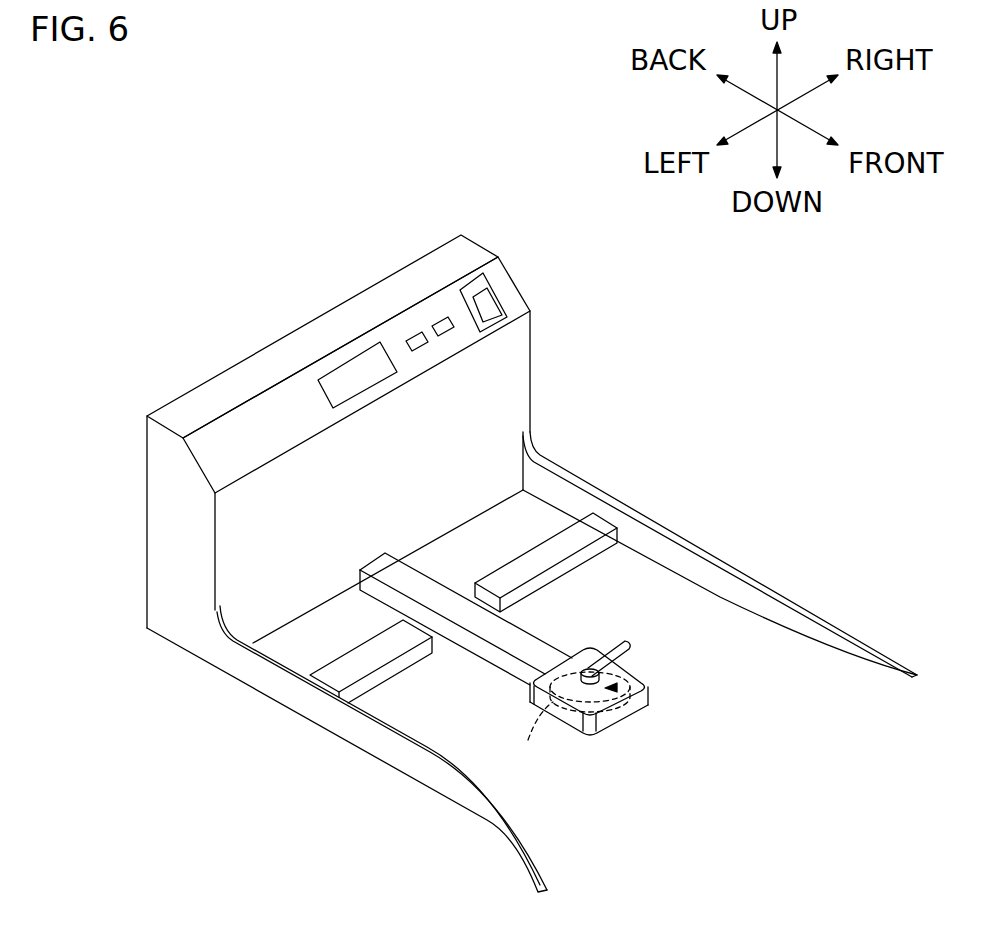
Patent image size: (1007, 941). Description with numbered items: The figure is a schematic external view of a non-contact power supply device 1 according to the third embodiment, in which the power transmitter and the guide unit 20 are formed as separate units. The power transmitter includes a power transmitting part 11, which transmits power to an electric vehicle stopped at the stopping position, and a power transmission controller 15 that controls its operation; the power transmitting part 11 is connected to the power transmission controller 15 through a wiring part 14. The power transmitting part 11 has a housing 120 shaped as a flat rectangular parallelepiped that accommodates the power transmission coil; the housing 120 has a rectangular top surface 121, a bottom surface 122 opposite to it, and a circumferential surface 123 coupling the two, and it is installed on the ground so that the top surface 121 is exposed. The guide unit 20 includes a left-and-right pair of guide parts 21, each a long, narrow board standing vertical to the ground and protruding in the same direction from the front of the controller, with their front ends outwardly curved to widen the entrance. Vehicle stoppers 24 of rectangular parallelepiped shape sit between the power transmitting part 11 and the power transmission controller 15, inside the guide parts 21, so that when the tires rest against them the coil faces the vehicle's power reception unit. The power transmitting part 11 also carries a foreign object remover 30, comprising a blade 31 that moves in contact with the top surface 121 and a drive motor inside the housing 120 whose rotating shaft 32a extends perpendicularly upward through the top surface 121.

The non-contact power supply device 1 is at (580, 323).
The power transmitting part 11 is at (570, 743).
The wiring part 14 is at (522, 645).
The power transmission controller 15 is at (268, 340).
The guide unit 20 is at (423, 825).
The guide part 21 is at (430, 750).
The vehicle stopper 24 is at (332, 670).
The foreign object remover 30 is at (648, 695).
The blade 31 is at (625, 656).
The rotating shaft 32a is at (588, 670).
The housing 120 is at (163, 488).
The top surface 121 is at (603, 708).
The bottom surface 122 is at (602, 740).
The circumferential surface 123 is at (608, 722).